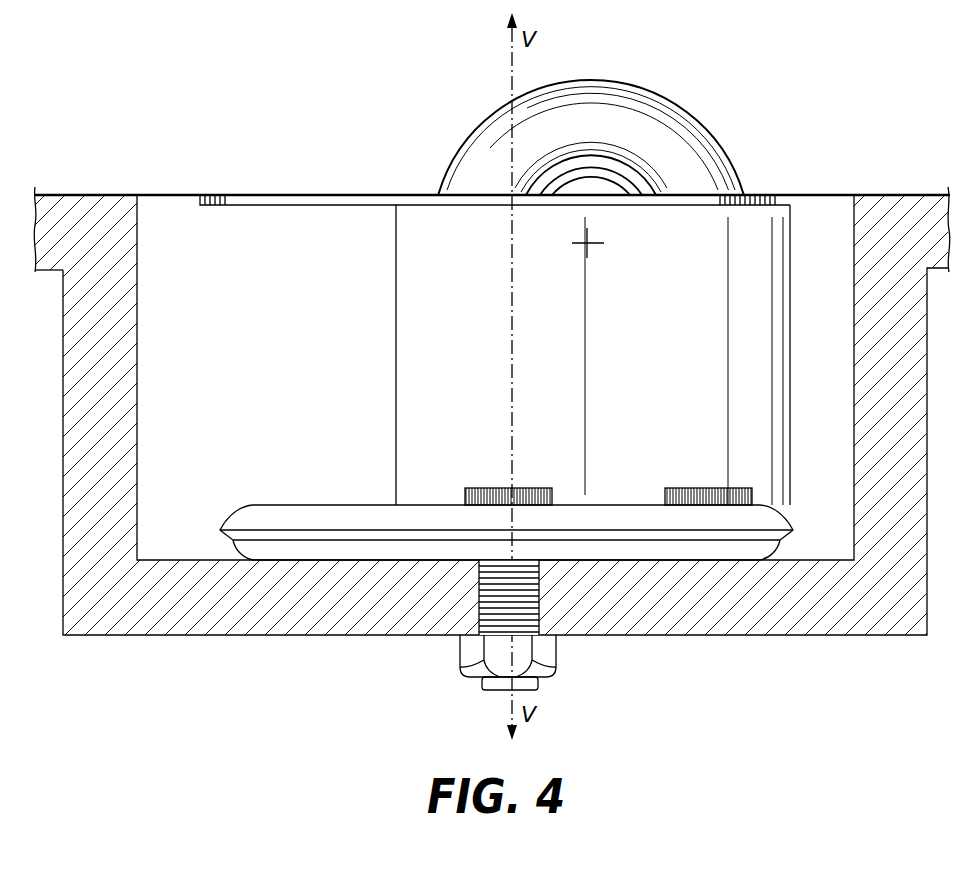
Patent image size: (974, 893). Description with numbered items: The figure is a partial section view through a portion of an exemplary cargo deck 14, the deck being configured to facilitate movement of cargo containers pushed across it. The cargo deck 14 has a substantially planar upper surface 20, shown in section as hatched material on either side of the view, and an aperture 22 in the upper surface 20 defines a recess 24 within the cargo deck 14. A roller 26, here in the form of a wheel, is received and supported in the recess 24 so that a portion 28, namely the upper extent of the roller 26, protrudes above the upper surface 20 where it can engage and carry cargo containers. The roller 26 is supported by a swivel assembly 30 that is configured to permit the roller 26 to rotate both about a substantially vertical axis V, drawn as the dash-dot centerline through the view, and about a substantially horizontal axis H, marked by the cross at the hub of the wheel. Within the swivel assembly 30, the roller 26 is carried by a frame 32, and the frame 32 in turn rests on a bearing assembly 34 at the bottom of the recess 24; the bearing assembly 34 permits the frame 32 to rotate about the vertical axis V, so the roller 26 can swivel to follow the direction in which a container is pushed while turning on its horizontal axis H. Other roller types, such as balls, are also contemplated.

The cargo deck 14 is at (867, 118).
The upper surface 20 is at (88, 193).
The aperture 22 is at (140, 200).
The recess 24 is at (211, 288).
The roller 26 is at (683, 117).
The portion of roller 28 is at (460, 92).
The swivel assembly 30 is at (296, 376).
The frame 32 is at (684, 361).
The bearing assembly 34 is at (290, 505).
The horizontal axis H is at (596, 250).